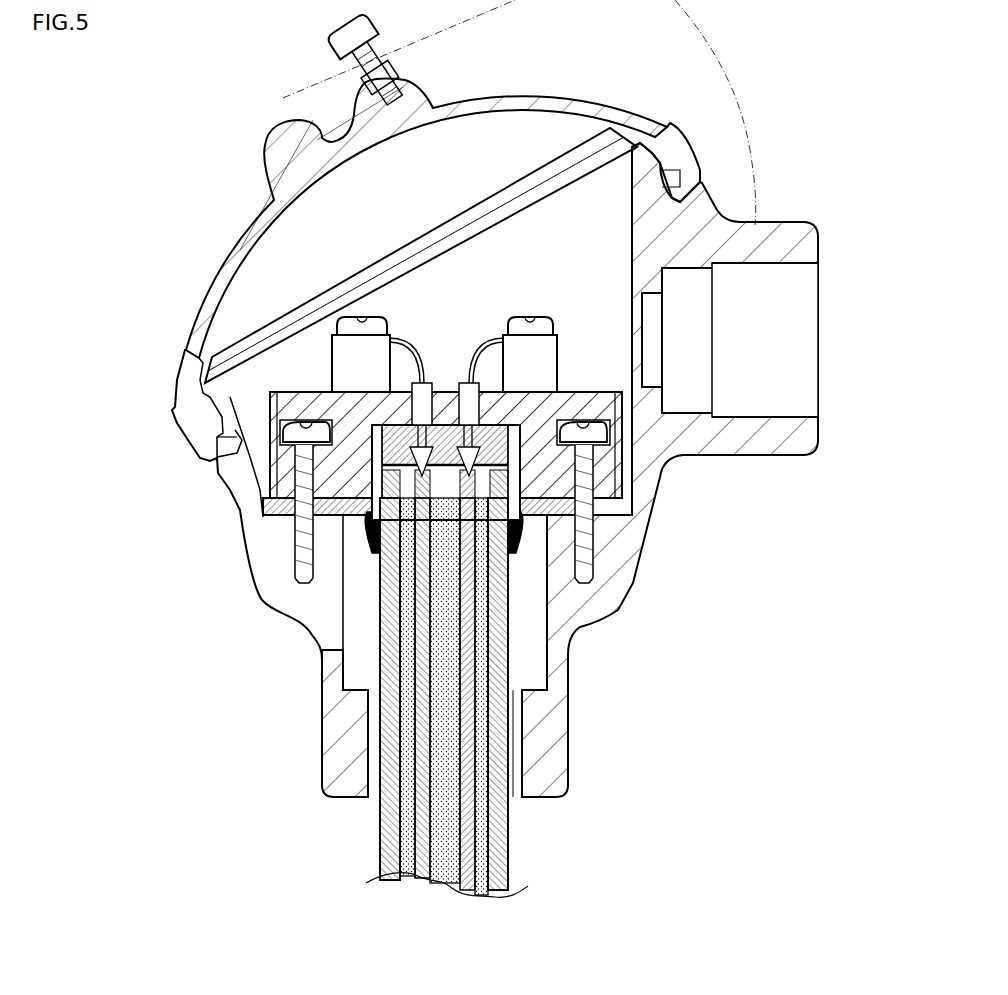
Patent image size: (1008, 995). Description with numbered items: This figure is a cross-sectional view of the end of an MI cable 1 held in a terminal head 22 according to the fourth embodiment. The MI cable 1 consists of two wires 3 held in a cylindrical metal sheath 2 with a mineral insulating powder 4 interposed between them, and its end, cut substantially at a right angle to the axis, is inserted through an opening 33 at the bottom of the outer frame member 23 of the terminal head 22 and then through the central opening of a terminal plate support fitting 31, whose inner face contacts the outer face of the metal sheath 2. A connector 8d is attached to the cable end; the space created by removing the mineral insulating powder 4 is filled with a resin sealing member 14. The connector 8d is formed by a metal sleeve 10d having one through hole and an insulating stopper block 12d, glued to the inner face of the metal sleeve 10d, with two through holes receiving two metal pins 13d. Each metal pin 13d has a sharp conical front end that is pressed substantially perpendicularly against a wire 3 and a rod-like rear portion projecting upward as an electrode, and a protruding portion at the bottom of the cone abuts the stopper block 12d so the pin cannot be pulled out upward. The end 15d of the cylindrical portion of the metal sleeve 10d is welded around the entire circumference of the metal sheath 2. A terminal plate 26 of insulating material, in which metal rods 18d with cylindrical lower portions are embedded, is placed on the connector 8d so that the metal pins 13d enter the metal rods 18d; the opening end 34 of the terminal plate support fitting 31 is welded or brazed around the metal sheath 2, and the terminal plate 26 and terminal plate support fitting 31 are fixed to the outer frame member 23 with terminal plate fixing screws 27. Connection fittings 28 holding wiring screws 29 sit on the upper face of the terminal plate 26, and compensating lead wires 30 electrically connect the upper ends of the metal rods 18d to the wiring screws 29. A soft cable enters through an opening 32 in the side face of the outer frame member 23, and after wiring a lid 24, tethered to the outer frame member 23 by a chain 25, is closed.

The MI cable 1 is at (560, 855).
The metal sheath 2 is at (512, 838).
The wires 3 is at (410, 862).
The mineral insulating powder 4 is at (395, 838).
The connector 8d is at (703, 652).
The metal sleeve 10d is at (595, 550).
The stopper block 12d is at (598, 525).
The metal pins 13d is at (585, 580).
The resin sealing member 14 is at (330, 628).
The end of the cylindrical portion 15d is at (300, 590).
The metal rods 18d is at (268, 410).
The terminal head 22 is at (145, 160).
The outer frame member 23 is at (325, 660).
The lid 24 is at (265, 218).
The chain 25 is at (655, 0).
The terminal plate 26 is at (262, 500).
The terminal plate fixing screws 27 is at (300, 520).
The connection fittings 28 is at (355, 368).
The wiring screws 29 is at (345, 340).
The compensating lead wires 30 is at (455, 375).
The terminal plate support fitting 31 is at (300, 560).
The opening 32 is at (760, 222).
The opening 33 is at (545, 745).
The opening end 34 is at (318, 605).